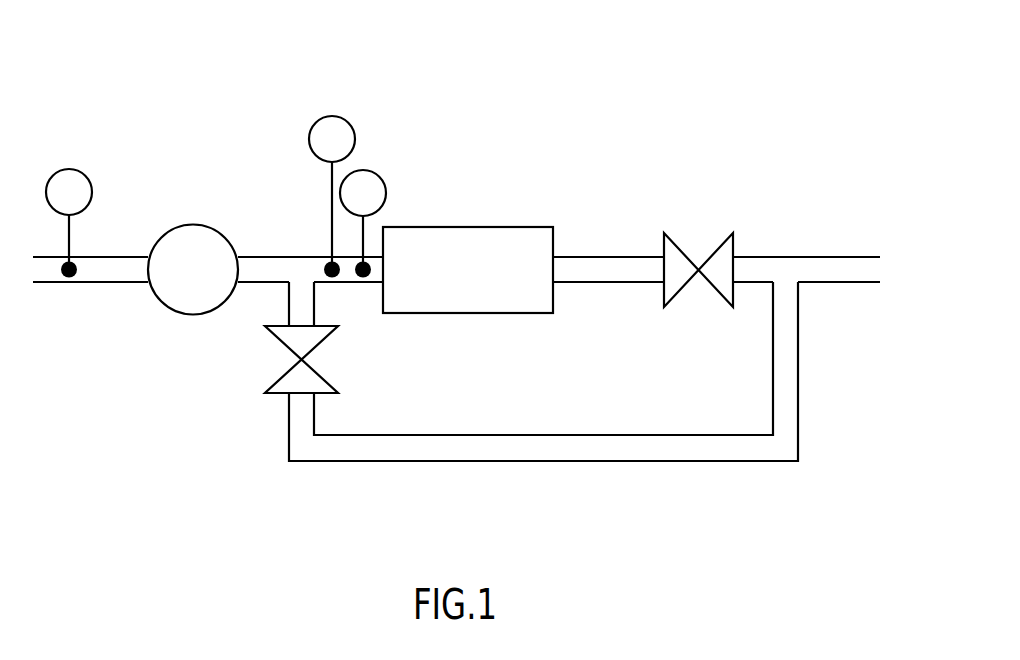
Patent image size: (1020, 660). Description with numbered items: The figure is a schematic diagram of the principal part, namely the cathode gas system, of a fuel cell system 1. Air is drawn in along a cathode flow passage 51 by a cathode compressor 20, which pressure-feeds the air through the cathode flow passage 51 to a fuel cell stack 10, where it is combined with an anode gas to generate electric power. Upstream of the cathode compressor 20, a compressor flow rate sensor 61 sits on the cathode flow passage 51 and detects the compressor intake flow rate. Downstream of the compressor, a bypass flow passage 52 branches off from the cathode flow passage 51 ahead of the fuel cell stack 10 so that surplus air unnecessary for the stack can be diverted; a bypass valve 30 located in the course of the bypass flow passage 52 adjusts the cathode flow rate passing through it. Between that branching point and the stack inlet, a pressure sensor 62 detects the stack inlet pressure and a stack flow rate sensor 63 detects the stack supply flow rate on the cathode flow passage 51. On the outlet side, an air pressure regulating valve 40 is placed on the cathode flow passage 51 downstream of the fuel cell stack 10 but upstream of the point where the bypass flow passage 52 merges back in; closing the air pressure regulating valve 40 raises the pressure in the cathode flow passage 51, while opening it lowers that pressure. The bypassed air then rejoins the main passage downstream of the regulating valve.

The fuel cell system 1 is at (845, 100).
The fuel cell stack 10 is at (503, 227).
The cathode compressor 20 is at (200, 225).
The bypass valve 30 is at (298, 360).
The air pressure regulating valve 40 is at (697, 263).
The cathode flow passage 51 is at (347, 284).
The bypass flow passage 52 is at (530, 435).
The compressor flow rate sensor 61 is at (86, 175).
The pressure sensor 62 is at (342, 118).
The stack flow rate sensor 63 is at (379, 176).